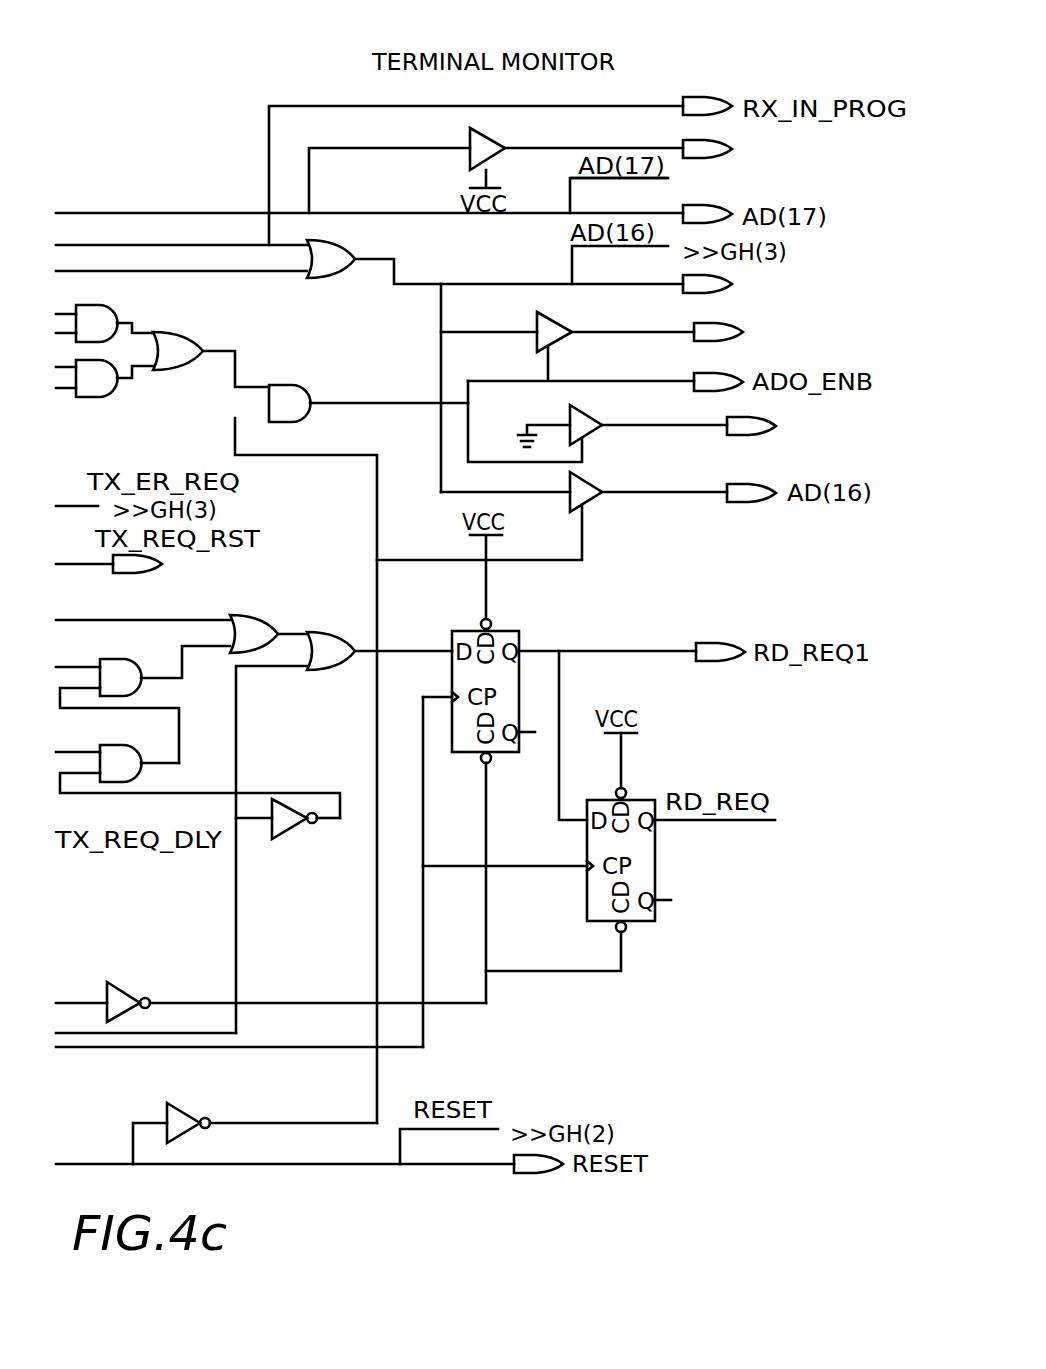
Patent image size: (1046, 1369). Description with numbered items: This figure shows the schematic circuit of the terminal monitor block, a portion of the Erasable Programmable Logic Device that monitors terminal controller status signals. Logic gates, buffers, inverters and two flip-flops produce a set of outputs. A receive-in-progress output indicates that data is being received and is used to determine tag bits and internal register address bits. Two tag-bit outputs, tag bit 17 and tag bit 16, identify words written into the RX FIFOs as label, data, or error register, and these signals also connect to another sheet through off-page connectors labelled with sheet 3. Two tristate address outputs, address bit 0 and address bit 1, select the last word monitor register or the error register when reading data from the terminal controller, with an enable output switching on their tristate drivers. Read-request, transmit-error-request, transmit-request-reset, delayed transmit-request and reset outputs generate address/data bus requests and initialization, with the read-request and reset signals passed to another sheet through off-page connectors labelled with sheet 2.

The D17 output port 17 is at (735, 150).
The D16 output port 16 is at (735, 285).
The AD(0) output port 0 is at (760, 332).
The AD(1) output port 1 is at (790, 426).
The RD_REQ to GH(2) connector 2 is at (773, 828).
The AD(17) to GH(3) connector 3 is at (678, 184).